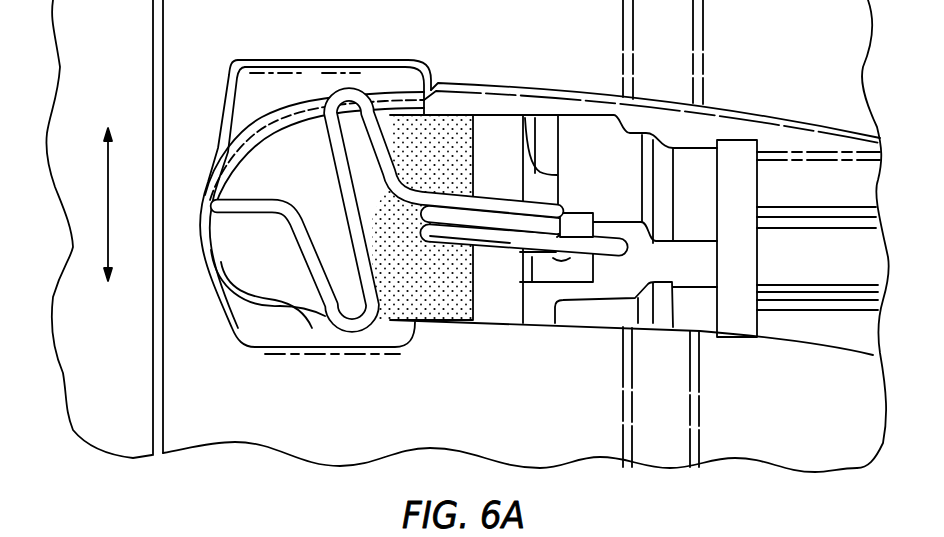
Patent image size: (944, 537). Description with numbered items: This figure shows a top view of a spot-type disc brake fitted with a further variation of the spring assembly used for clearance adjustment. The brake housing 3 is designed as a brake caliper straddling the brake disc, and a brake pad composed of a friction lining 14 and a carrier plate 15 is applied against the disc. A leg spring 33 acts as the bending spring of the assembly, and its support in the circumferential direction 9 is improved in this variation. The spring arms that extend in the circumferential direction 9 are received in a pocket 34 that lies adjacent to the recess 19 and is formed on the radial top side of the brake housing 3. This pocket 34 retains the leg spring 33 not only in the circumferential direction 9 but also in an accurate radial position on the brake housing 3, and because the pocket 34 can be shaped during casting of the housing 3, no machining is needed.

The brake housing 3 is at (118, 397).
The circumferential direction 9 is at (110, 252).
The friction lining 14 is at (450, 293).
The carrier plate 15 is at (510, 303).
The recess 19 is at (302, 143).
The leg spring 33 is at (488, 193).
The pocket 34 is at (307, 84).